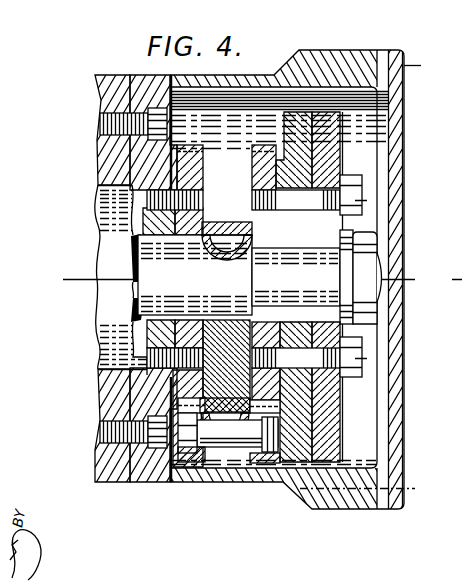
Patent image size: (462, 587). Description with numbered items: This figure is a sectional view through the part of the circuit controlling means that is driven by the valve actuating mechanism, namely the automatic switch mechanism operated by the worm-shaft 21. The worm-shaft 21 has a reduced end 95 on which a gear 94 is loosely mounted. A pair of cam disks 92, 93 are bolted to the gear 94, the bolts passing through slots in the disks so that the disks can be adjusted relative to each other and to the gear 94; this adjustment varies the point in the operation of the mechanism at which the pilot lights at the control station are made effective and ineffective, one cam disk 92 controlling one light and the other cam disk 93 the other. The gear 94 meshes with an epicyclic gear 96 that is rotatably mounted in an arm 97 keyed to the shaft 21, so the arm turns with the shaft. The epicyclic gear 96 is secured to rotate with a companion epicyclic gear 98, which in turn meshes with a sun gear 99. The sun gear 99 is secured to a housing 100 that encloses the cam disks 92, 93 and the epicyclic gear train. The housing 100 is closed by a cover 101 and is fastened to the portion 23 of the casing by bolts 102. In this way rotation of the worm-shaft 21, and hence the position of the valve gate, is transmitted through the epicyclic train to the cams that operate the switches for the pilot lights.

The worm-shaft 21 is at (173, 280).
The portion of the casing 23 is at (118, 472).
The cam disk 92 is at (290, 122).
The cam disk 93 is at (342, 118).
The gear 94 is at (262, 168).
The reduced end of the worm-shaft 95 is at (317, 277).
The epicyclic gear 96 is at (260, 463).
The arm 97 is at (228, 398).
The companion epicyclic gear 98 is at (195, 447).
The sun gear 99 is at (192, 160).
The housing 100 is at (146, 80).
The cover 101 is at (404, 52).
The bolts 102 is at (100, 122).